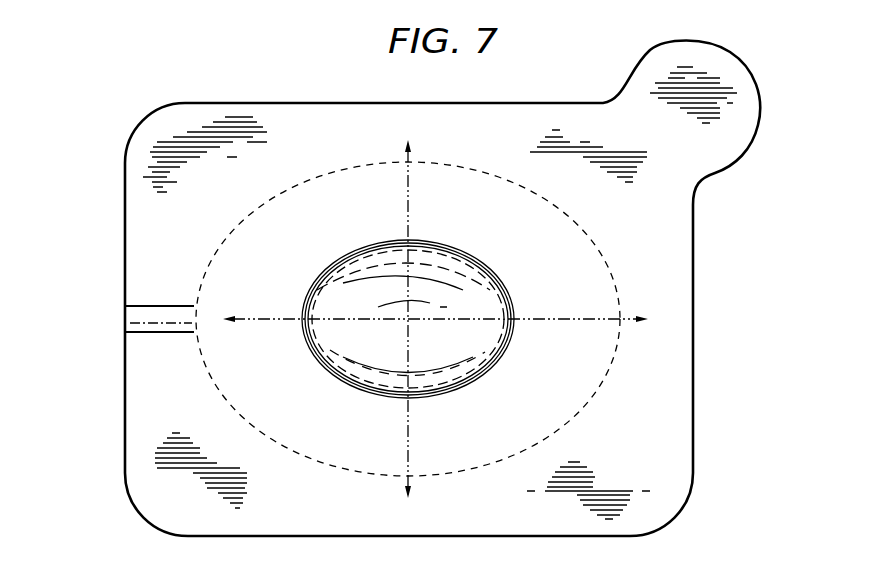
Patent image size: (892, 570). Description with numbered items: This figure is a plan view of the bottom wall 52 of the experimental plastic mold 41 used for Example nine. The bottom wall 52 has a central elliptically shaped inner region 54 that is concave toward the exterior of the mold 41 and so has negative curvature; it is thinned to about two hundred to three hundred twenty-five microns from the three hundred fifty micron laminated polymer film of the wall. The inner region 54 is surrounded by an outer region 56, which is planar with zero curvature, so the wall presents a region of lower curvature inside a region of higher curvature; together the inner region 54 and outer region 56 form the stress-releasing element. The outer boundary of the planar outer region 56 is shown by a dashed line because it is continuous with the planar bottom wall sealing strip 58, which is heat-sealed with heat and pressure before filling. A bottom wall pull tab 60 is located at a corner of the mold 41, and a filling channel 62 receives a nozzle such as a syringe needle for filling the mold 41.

The mold 41 is at (185, 45).
The bottom wall 52 is at (112, 190).
The central elliptically shaped inner region 54 is at (467, 362).
The outer region 56 is at (314, 255).
The bottom wall sealing strip 58 is at (508, 144).
The bottom wall pull tab 60 is at (663, 144).
The filling channel 62 is at (117, 319).